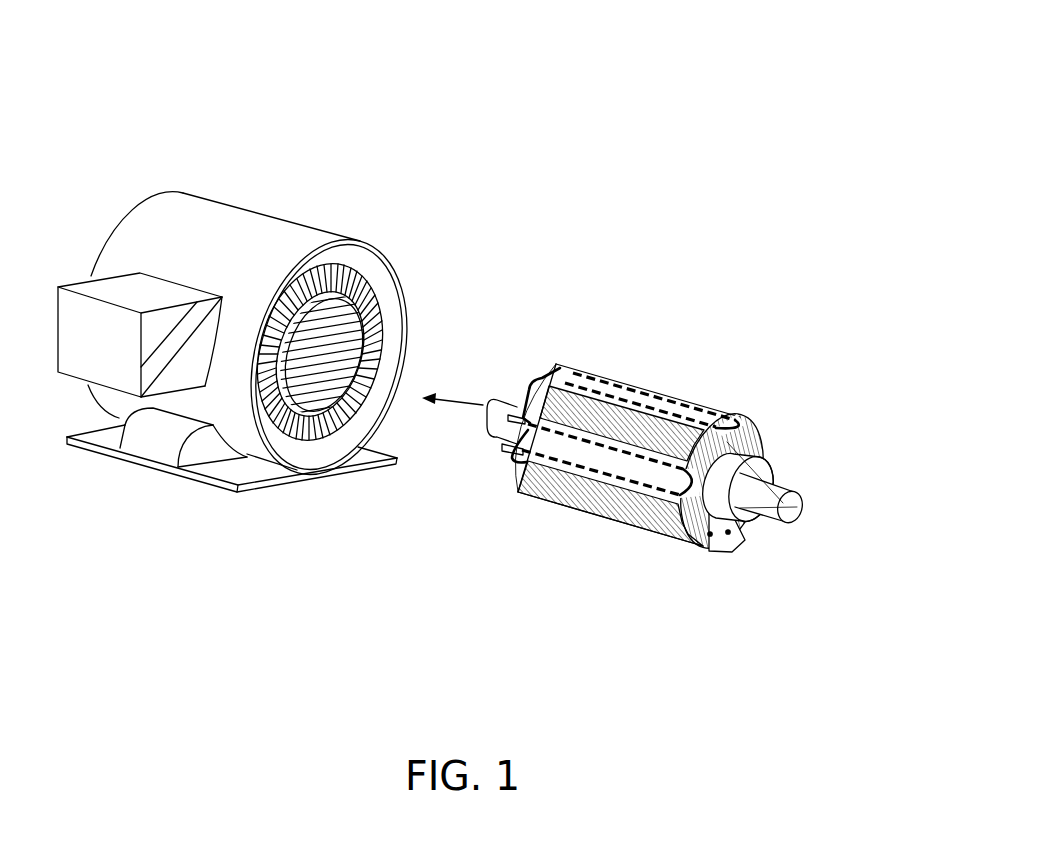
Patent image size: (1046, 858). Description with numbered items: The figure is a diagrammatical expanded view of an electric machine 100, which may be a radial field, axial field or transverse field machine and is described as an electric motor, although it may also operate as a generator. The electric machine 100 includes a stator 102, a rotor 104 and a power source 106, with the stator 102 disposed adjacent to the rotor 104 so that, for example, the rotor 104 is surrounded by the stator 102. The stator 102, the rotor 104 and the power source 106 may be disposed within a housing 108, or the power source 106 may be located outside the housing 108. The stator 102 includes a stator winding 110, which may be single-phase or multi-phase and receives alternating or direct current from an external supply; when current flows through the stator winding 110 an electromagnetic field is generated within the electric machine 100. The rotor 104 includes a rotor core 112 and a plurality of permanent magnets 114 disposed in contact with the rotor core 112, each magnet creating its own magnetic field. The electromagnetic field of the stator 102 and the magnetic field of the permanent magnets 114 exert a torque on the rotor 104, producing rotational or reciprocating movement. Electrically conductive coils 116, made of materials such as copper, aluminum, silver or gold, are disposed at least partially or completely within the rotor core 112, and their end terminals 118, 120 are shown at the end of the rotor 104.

The electric machine 100 is at (700, 66).
The stator 102 is at (387, 330).
The rotor 104 is at (753, 364).
The power source 106 is at (172, 292).
The housing 108 is at (242, 215).
The stator winding 110 is at (363, 296).
The rotor core 112 is at (797, 507).
The permanent magnets 114 is at (577, 514).
The electrically conductive coils 116 is at (682, 540).
The end terminal 118 is at (710, 537).
The end terminal 120 is at (729, 535).